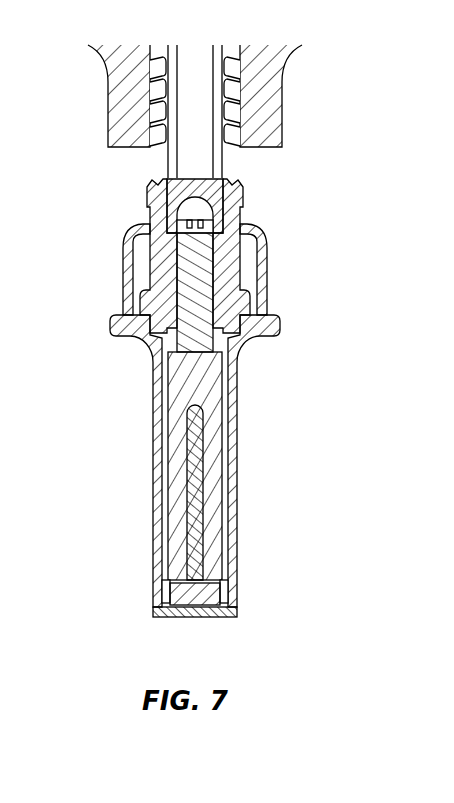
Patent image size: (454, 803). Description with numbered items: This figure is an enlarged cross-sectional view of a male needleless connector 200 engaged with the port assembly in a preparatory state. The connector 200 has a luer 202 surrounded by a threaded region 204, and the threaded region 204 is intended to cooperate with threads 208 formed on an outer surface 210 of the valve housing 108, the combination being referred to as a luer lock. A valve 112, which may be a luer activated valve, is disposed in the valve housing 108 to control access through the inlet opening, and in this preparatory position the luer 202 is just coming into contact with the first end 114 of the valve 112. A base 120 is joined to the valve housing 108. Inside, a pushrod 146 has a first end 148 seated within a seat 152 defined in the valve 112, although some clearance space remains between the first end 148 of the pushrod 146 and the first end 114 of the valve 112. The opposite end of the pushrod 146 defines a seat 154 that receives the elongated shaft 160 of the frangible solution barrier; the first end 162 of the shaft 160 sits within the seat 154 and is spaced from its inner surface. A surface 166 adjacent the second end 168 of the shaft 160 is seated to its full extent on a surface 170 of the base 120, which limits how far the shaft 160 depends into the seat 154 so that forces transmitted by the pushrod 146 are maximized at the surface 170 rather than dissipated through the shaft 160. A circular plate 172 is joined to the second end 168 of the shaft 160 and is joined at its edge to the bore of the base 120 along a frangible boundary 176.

The male needleless connector 200 is at (265, 111).
The luer 202 is at (226, 118).
The threaded region 204 is at (225, 84).
The threads 208 is at (244, 184).
The first end of the valve 114 is at (244, 206).
The outer surface of the housing 210 is at (264, 232).
The valve 112 is at (259, 256).
The valve housing 108 is at (234, 444).
The seat 152 is at (163, 206).
The first end of the pushrod 148 is at (192, 277).
The pushrod 146 is at (236, 386).
The base 120 is at (220, 491).
The seat 154 is at (185, 413).
The first end of the shaft 162 is at (151, 492).
The elongated shaft 160 is at (161, 466).
The second end of the shaft 168 is at (187, 583).
The surface 166 is at (252, 581).
The surface of the base 170 is at (224, 587).
The circular plate 172 is at (162, 613).
The frangible boundary 176 is at (209, 637).